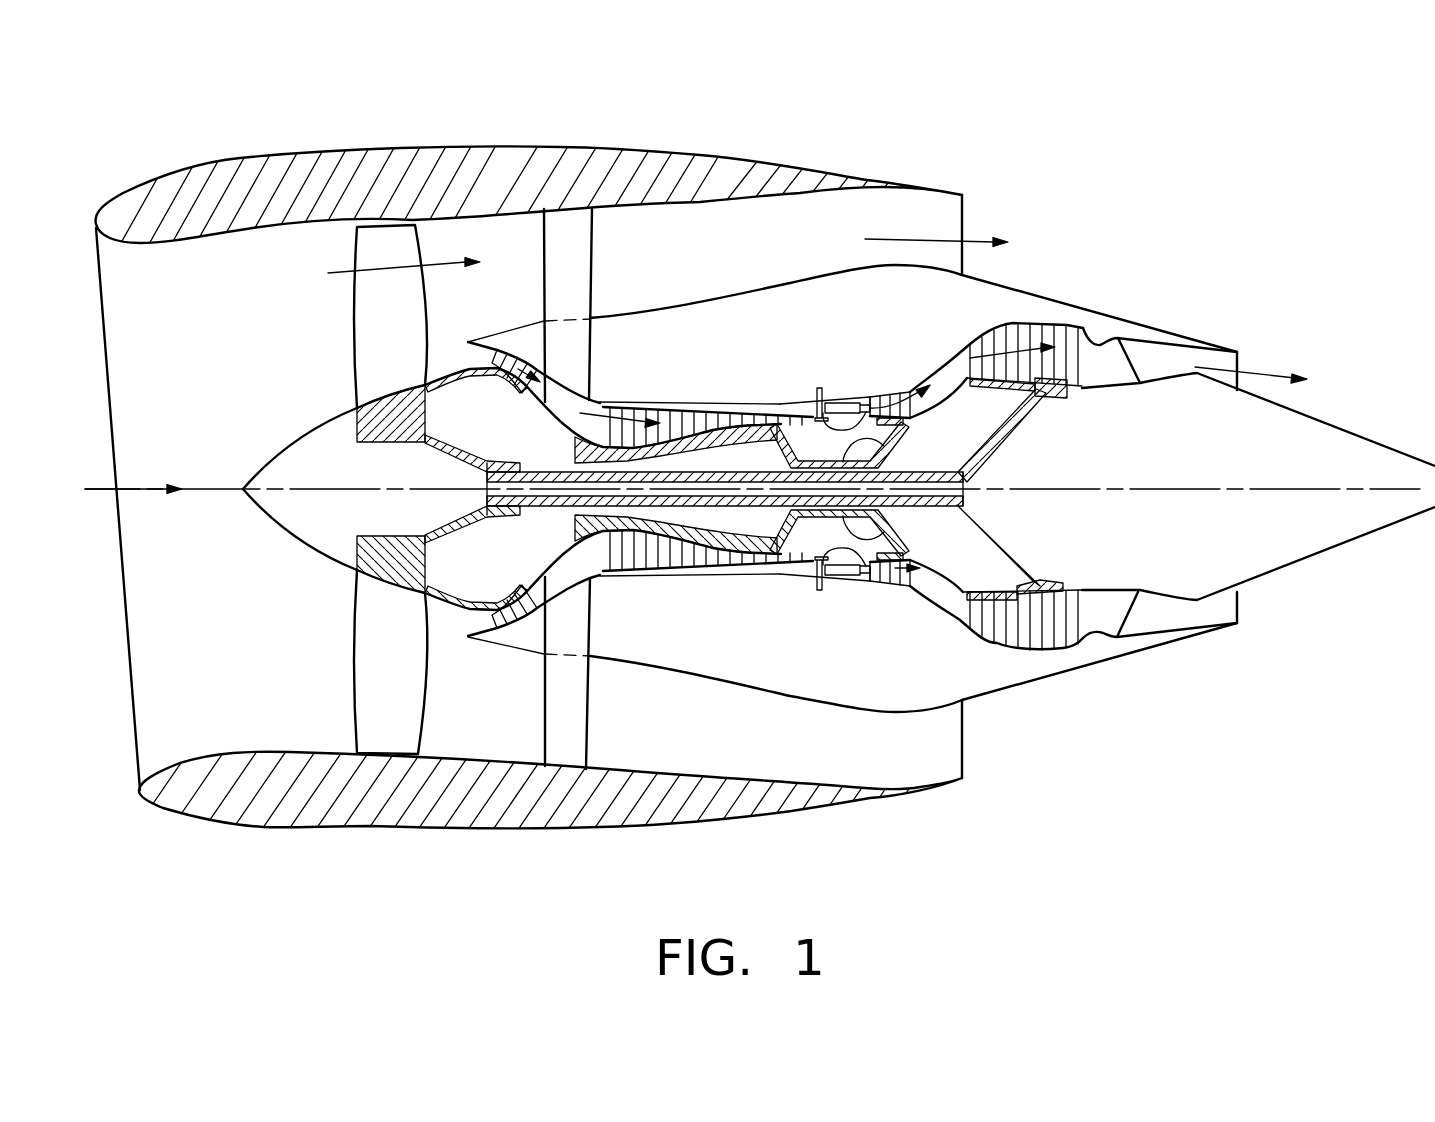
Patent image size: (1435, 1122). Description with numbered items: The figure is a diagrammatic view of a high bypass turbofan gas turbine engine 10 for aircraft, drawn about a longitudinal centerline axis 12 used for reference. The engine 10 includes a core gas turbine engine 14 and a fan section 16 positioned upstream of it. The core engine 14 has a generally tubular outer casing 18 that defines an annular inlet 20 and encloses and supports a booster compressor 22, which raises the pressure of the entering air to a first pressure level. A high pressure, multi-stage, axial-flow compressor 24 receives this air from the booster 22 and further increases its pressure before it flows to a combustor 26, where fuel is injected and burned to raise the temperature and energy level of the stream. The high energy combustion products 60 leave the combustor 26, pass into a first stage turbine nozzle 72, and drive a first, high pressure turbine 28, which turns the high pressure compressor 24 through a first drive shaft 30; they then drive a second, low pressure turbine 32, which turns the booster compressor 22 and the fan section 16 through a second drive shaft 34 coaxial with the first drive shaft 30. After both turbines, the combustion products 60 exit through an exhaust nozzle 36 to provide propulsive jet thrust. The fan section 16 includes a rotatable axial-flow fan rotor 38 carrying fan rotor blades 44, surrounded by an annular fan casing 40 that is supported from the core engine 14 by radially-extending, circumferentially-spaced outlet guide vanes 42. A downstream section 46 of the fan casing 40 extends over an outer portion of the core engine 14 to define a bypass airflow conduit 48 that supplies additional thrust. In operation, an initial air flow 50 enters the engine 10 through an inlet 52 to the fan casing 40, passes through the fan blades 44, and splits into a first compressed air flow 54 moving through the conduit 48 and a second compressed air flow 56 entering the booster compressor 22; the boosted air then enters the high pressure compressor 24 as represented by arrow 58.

The gas turbine engine 10 is at (1150, 170).
The longitudinal centerline axis 12 is at (1170, 484).
The core gas turbine engine 14 is at (796, 348).
The fan section 16 is at (418, 137).
The outer casing 18 is at (790, 694).
The annular inlet 20 is at (466, 621).
The booster compressor 22 is at (540, 577).
The high pressure compressor 24 is at (628, 558).
The combustor 26 is at (838, 570).
The first turbine 28 is at (918, 570).
The first drive shaft 30 is at (884, 446).
The second turbine 32 is at (1063, 645).
The second drive shaft 34 is at (553, 467).
The exhaust nozzle 36 is at (1240, 367).
The fan rotor 38 is at (420, 444).
The fan casing 40 is at (406, 830).
The outlet guide vanes 42 is at (593, 260).
The fan rotor blades 44 is at (355, 677).
The downstream section 46 is at (848, 170).
The bypass airflow conduit 48 is at (761, 253).
The initial air flow 50 is at (123, 475).
The inlet 52 is at (130, 766).
The first compressed air flow 54 is at (378, 264).
The second compressed air flow 56 is at (447, 357).
The booster discharge air flow 58 is at (617, 420).
The combustion products 60 is at (891, 382).
The first stage turbine nozzle 72 is at (858, 573).